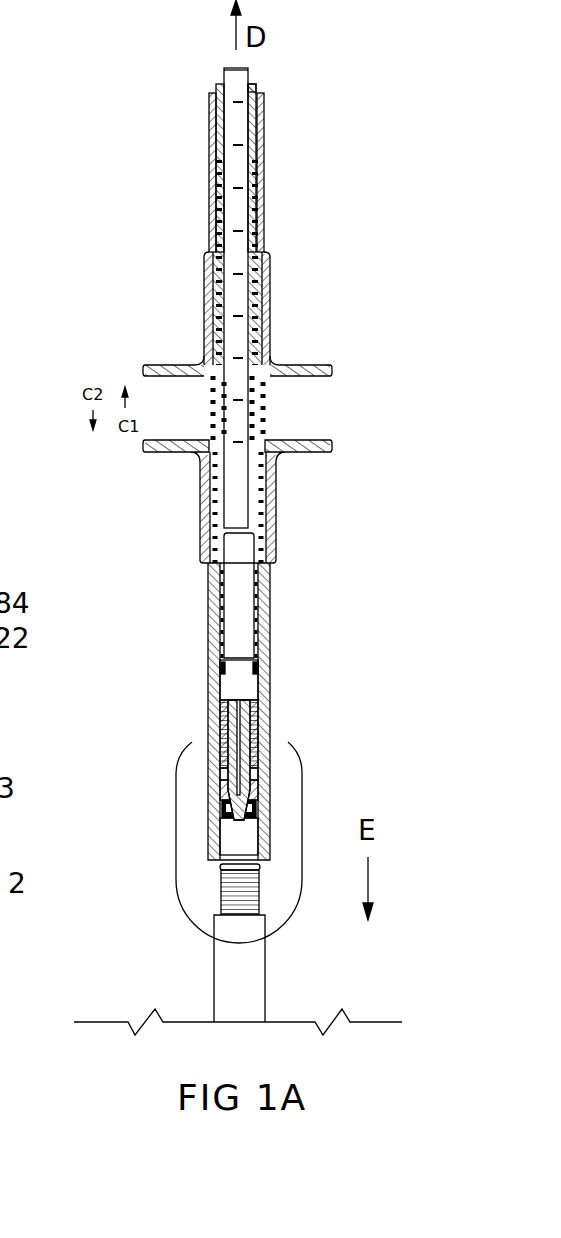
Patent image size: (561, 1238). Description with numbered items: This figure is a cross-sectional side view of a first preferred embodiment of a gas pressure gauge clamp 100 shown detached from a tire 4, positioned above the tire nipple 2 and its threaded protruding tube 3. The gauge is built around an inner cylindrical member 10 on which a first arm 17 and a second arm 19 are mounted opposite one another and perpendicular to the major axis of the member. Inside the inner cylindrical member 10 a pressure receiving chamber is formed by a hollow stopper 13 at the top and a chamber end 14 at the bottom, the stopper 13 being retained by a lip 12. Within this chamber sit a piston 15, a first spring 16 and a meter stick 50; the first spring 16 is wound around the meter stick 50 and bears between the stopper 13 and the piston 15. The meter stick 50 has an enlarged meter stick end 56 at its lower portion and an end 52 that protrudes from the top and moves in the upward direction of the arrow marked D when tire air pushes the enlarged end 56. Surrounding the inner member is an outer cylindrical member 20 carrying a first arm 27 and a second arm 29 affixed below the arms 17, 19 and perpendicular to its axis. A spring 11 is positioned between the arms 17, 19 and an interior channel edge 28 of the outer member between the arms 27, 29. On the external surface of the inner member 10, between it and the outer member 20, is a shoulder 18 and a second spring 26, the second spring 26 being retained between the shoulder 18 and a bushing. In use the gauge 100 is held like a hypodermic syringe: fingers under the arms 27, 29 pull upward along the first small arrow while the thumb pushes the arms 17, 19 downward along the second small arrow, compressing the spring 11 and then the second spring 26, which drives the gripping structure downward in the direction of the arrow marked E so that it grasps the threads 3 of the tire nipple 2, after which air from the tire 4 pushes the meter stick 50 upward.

The gas pressure gauge clamp 100 is at (172, 133).
The meter stick 50 is at (237, 300).
The end of meter stick 52 is at (235, 68).
The lip 12 is at (213, 97).
The hollow stopper 13 is at (255, 84).
The inner cylindrical member 10 is at (262, 140).
The first spring 16 is at (262, 213).
The spring 11 is at (267, 433).
The second arm 19 is at (143, 370).
The first arm 17 is at (332, 366).
The second arm 29 is at (162, 451).
The first arm 27 is at (332, 440).
The interior channel edge 28 is at (268, 500).
The outer cylindrical member 20 is at (208, 593).
The enlarged meter stick end 56 is at (208, 647).
The piston 15 is at (270, 647).
The chamber end 14 is at (212, 688).
The shoulder 18 is at (270, 703).
The second spring 26 is at (270, 738).
The threaded protruding tube 3 is at (258, 885).
The tire nipple 2 is at (266, 958).
The tire 4 is at (100, 1022).